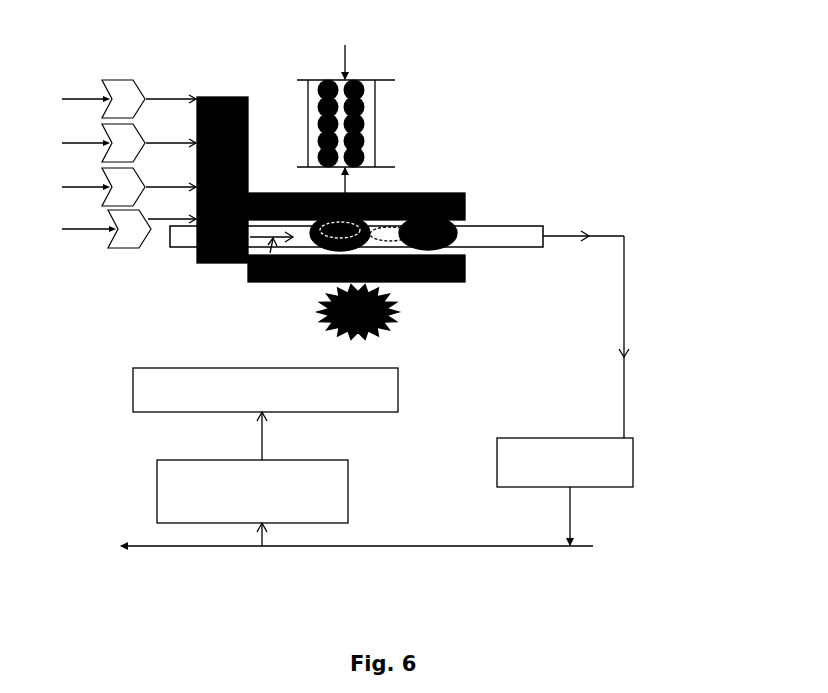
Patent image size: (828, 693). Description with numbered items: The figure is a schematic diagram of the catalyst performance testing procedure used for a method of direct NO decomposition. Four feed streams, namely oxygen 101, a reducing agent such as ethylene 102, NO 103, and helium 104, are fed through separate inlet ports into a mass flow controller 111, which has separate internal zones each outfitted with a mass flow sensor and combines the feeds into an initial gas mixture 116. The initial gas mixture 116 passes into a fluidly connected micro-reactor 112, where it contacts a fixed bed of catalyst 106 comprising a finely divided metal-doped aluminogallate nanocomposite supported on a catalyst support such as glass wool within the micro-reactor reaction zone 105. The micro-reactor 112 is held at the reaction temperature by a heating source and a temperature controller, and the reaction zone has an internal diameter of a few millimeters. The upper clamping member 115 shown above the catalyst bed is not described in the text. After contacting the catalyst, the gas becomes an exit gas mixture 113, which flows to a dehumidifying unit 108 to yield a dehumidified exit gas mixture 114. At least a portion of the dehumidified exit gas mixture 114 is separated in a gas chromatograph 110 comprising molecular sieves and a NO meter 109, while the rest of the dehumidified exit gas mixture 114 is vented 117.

The oxygen 101 is at (129, 99).
The reducing agent 102 is at (129, 143).
The NO 103 is at (129, 187).
The helium 104 is at (129, 229).
The micro-reactor reaction zone 105 is at (334, 79).
The fixed bed of catalyst 106 is at (537, 226).
The dehumidifying unit 108 is at (565, 492).
The NO meter 109 is at (265, 390).
The gas chromatograph 110 is at (252, 479).
The mass flow controller 111 is at (222, 92).
The micro-reactor 112 is at (441, 287).
The exit gas mixture 113 is at (628, 307).
The dehumidified exit gas mixture 114 is at (468, 549).
The upper plate with droplets 115 is at (403, 193).
The initial gas mixture 116 is at (251, 283).
The vent 117 is at (97, 547).